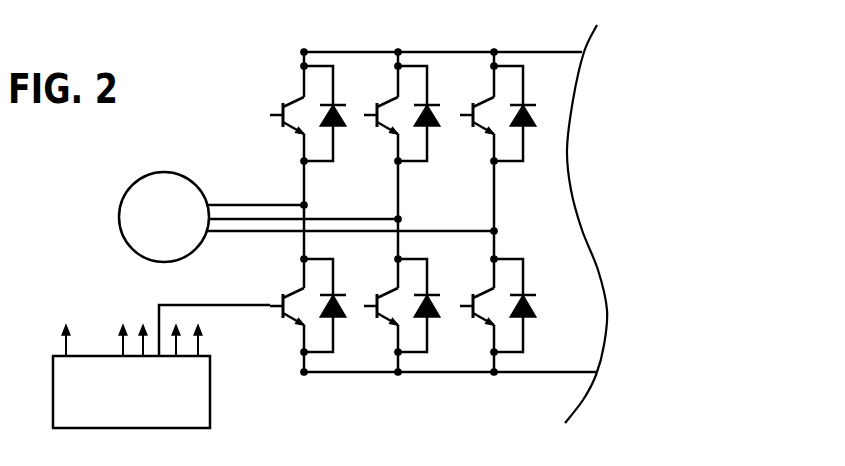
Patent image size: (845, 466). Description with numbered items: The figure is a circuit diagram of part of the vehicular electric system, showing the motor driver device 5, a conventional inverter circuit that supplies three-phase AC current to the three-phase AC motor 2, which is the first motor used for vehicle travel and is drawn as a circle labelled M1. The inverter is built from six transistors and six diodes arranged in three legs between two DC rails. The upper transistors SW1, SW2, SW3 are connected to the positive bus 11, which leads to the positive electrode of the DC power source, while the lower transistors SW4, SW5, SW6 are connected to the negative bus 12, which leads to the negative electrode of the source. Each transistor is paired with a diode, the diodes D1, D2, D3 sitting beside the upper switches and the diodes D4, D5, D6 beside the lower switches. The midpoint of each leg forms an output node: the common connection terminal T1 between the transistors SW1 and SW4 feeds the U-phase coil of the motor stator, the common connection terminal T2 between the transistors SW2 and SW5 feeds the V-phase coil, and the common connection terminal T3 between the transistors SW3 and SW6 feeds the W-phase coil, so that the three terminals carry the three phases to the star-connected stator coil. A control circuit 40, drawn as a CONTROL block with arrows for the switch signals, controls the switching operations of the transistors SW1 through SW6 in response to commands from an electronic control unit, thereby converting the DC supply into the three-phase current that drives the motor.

The three-phase AC motor 2 is at (136, 180).
The motor driver device 5 is at (401, 214).
The positive bus 11 is at (421, 52).
The negative bus 12 is at (421, 372).
The control circuit 40 is at (210, 405).
The transistor SW1 is at (291, 104).
The transistor SW2 is at (385, 104).
The transistor SW3 is at (481, 104).
The transistor SW4 is at (291, 295).
The transistor SW5 is at (385, 295).
The transistor SW6 is at (481, 295).
The diode D1 is at (338, 127).
The diode D2 is at (432, 127).
The diode D3 is at (528, 127).
The diode D4 is at (338, 318).
The diode D5 is at (432, 318).
The diode D6 is at (528, 318).
The common connection terminal T1 is at (306, 204).
The common connection terminal T2 is at (400, 218).
The common connection terminal T3 is at (496, 231).